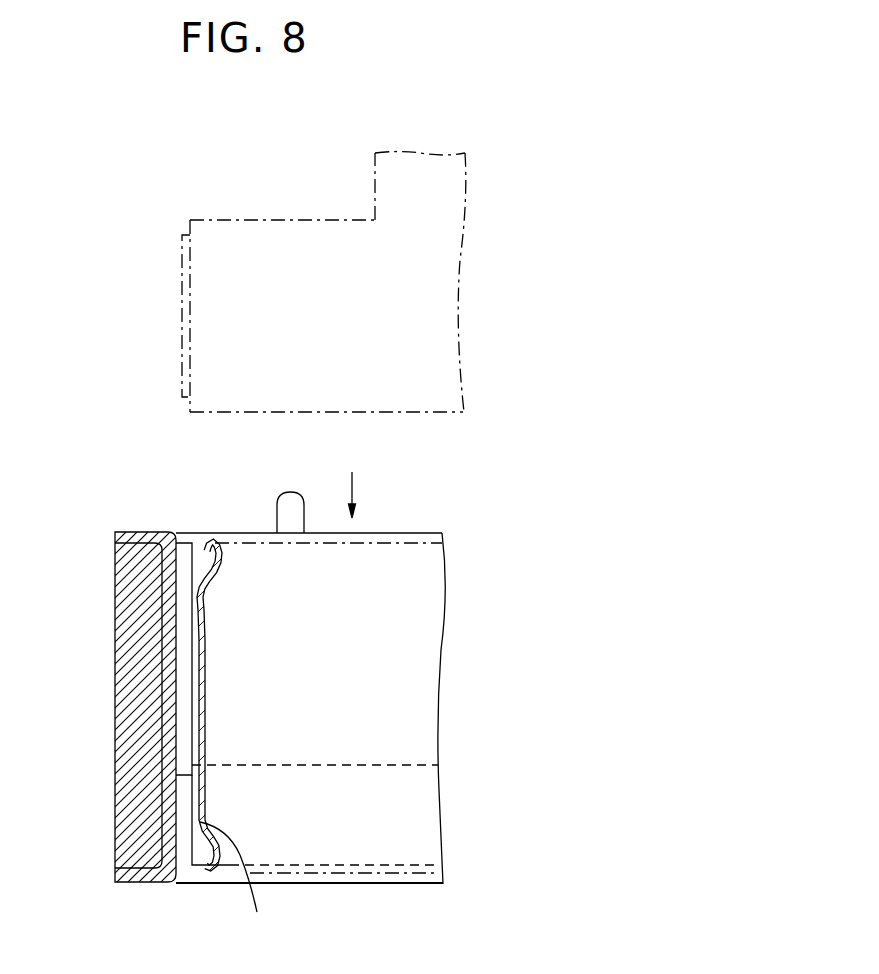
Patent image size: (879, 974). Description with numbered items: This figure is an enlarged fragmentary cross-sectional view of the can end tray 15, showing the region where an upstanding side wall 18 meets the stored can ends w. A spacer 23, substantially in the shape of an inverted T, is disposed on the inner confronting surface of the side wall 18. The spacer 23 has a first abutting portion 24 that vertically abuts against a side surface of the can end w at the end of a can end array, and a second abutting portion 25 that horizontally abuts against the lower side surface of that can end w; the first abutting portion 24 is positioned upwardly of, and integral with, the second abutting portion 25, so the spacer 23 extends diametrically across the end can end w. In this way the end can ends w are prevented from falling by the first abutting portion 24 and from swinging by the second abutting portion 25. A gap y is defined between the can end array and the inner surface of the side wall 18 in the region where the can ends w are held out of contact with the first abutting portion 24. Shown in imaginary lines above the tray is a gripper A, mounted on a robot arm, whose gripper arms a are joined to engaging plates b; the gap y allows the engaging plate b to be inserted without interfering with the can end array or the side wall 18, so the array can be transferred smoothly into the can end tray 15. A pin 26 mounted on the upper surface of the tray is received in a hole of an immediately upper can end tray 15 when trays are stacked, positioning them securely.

The can end tray 15 is at (131, 500).
The side wall 18 is at (162, 733).
The spacer 23 is at (166, 702).
The first abutting portion 24 is at (182, 622).
The second abutting portion 25 is at (180, 808).
The pin 26 is at (290, 494).
The gripper arm a is at (264, 237).
The gripper A is at (415, 138).
The engaging plate b is at (182, 380).
The gap y is at (184, 586).
The can end w is at (239, 882).